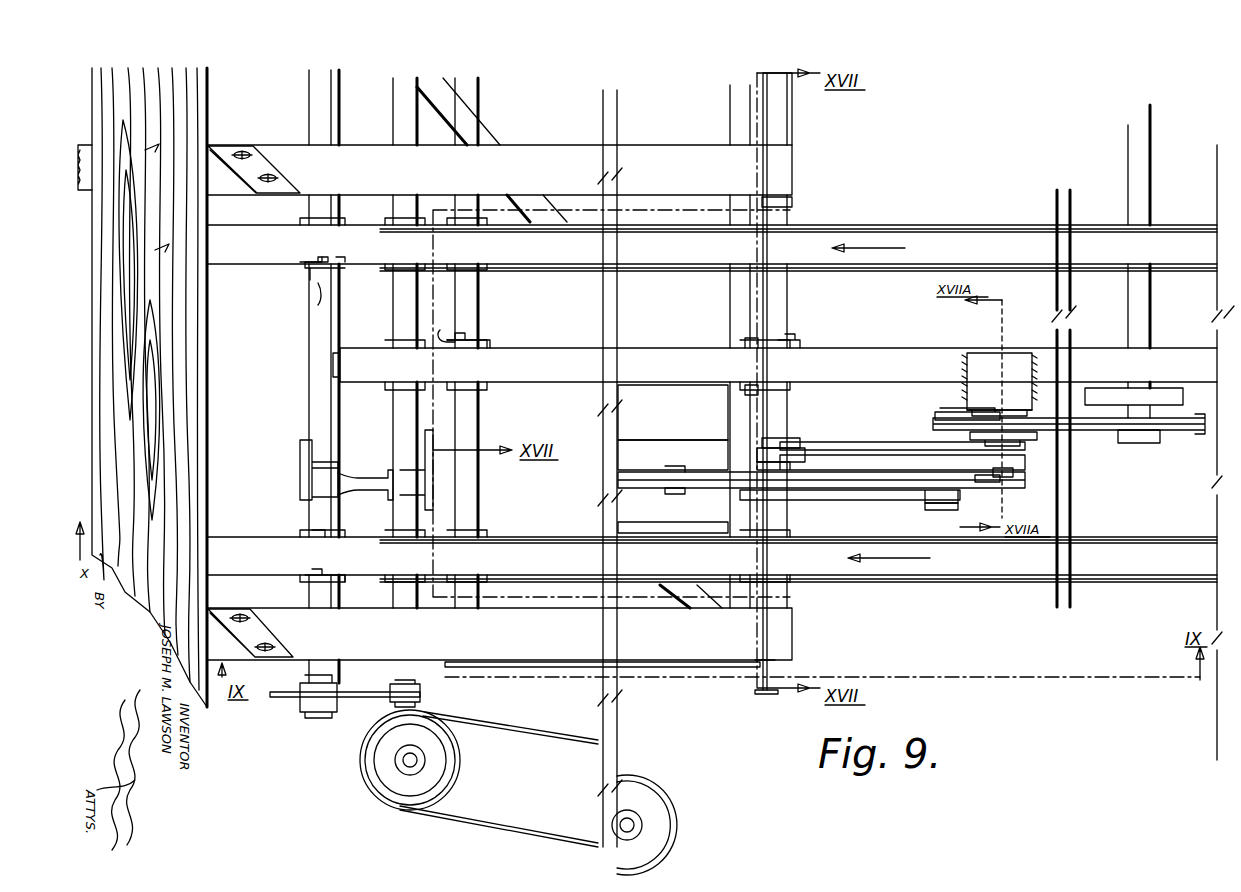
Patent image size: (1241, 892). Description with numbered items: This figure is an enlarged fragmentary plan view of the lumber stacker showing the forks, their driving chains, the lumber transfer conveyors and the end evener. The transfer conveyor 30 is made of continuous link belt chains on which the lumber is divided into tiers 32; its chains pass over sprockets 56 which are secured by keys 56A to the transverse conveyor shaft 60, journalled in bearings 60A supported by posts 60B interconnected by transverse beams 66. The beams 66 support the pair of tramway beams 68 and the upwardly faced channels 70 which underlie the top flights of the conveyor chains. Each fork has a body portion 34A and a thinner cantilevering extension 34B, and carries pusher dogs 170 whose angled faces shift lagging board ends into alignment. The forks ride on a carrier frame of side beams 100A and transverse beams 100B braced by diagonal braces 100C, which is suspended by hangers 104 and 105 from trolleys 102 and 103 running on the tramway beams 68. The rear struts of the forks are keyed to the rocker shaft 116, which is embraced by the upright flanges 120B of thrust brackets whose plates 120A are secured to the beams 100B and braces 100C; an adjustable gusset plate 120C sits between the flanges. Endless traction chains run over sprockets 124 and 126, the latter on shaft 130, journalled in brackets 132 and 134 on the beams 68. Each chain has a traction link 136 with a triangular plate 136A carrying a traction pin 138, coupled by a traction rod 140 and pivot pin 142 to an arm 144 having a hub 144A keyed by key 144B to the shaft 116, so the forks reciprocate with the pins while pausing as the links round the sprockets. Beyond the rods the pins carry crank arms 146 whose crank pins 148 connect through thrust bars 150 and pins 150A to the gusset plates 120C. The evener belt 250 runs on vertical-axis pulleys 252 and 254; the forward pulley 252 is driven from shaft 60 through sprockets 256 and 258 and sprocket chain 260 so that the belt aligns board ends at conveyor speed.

The transfer conveyor 30 is at (262, 250).
The tiers or courses 32 is at (185, 93).
The fork body portion 34A is at (694, 172).
The fork cantilevering extension 34B is at (283, 157).
The sprockets 56 is at (315, 270).
The keys 56A is at (317, 283).
The transverse conveyor shaft 60 is at (318, 372).
The bearings 60A is at (312, 474).
The posts 60B is at (358, 475).
The transverse beams 66 is at (403, 406).
The tramway beams 68 is at (553, 381).
The upwardly faced channels 70 is at (915, 226).
The side beams 100A is at (690, 668).
The transverse beams 100B is at (460, 416).
The diagonal braces 100C is at (478, 136).
The trolleys 102 is at (455, 348).
The trolleys 103 is at (790, 352).
The hangers 104 is at (445, 331).
The hangers 105 is at (745, 339).
The rocker shaft 116 is at (780, 300).
The plate 120A is at (640, 446).
The upright flanges 120B is at (640, 472).
The gusset plate 120C is at (743, 478).
The traction sprockets 124 is at (960, 418).
The traction sprockets 126 is at (1150, 440).
The shaft 130 is at (1142, 169).
The brackets 132 is at (980, 410).
The brackets 134 is at (1130, 410).
The traction link 136 is at (999, 401).
The triangular plate 136A is at (1030, 443).
The traction pin 138 is at (998, 477).
The traction rods 140 is at (902, 449).
The pivot pins 142 is at (770, 440).
The arms 144 is at (778, 450).
The hubs 144A is at (790, 460).
The keys 144B is at (790, 472).
The crank arm 146 is at (978, 482).
The crank pins 148 is at (938, 504).
The thrust bars 150 is at (845, 487).
The pins 150A is at (690, 489).
The pusher dogs 170 is at (263, 168).
The evener belt 250 is at (513, 728).
The forward pulley 252 is at (425, 776).
The rear pulley 254 is at (652, 821).
The sprocket 256 is at (305, 708).
The sprocket 258 is at (400, 689).
The sprocket chain 260 is at (388, 702).